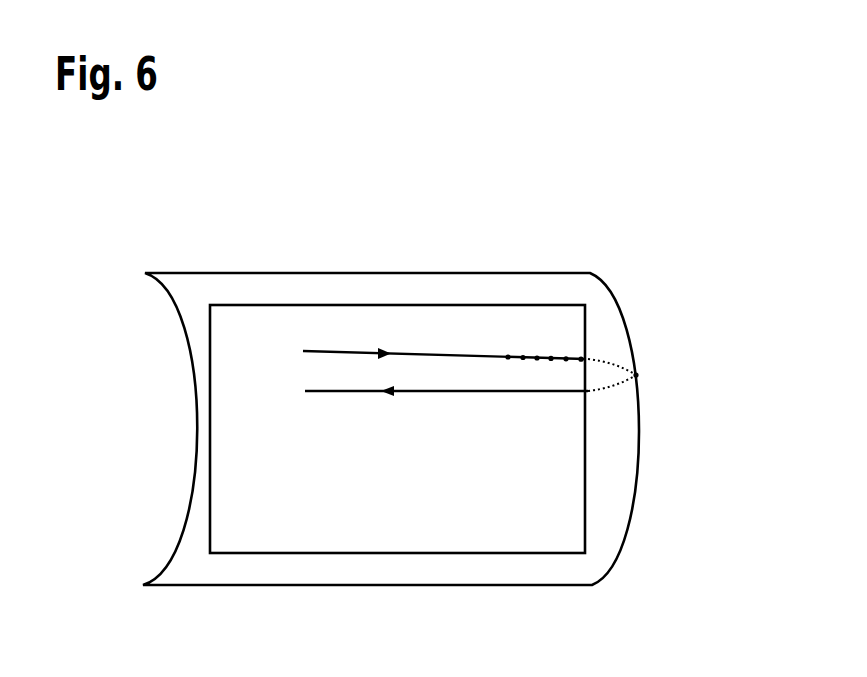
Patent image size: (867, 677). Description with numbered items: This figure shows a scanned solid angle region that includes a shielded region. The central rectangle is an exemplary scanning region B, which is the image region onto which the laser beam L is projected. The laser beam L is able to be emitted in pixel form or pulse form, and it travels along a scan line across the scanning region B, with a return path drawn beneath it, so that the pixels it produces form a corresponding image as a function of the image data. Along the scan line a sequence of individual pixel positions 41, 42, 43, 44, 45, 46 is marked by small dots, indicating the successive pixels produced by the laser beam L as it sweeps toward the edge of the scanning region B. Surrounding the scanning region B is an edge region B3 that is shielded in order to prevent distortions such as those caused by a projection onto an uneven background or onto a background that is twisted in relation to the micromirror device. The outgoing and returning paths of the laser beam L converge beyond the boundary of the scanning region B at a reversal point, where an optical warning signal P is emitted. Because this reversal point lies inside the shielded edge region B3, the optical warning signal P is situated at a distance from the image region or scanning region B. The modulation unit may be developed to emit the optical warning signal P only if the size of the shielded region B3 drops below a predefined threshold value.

The scanning region B is at (241, 331).
The laser beam L is at (335, 352).
The first measurement point 41 is at (508, 356).
The second measurement point 42 is at (523, 356).
The third measurement point 43 is at (537, 356).
The fourth measurement point 44 is at (551, 360).
The fifth measurement point 45 is at (566, 360).
The sixth measurement point 46 is at (581, 360).
The optical warning signal P is at (640, 375).
The shielded edge region B3 is at (615, 505).